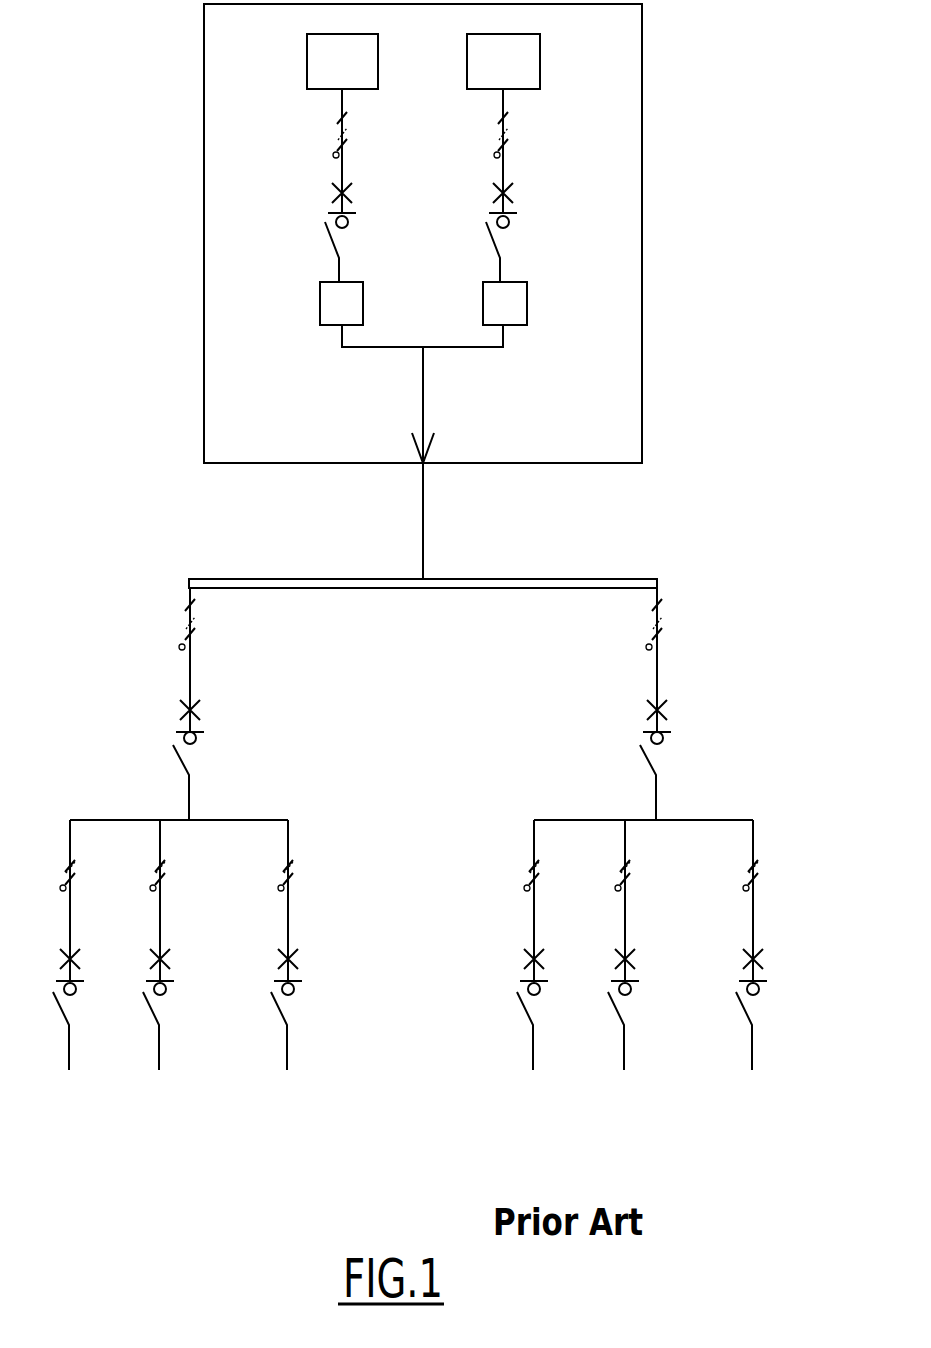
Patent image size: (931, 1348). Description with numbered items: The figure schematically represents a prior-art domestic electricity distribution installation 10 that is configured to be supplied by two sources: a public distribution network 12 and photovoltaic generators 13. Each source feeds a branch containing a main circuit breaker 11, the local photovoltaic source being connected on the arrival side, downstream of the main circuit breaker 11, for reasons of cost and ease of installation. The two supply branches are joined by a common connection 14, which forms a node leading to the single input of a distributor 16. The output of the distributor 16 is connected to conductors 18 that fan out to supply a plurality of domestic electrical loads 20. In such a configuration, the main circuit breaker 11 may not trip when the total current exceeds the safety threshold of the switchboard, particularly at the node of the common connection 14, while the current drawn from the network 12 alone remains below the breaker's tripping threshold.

The domestic electricity distribution installation 10 is at (625, 121).
The main circuit breaker 11 is at (293, 232).
The public distribution network 12 is at (342, 61).
The photovoltaic generators 13 is at (503, 61).
The common connection 14 is at (421, 372).
The distributor 16 is at (620, 578).
The conductors 18 is at (190, 605).
The domestic electrical loads 20 is at (765, 1108).